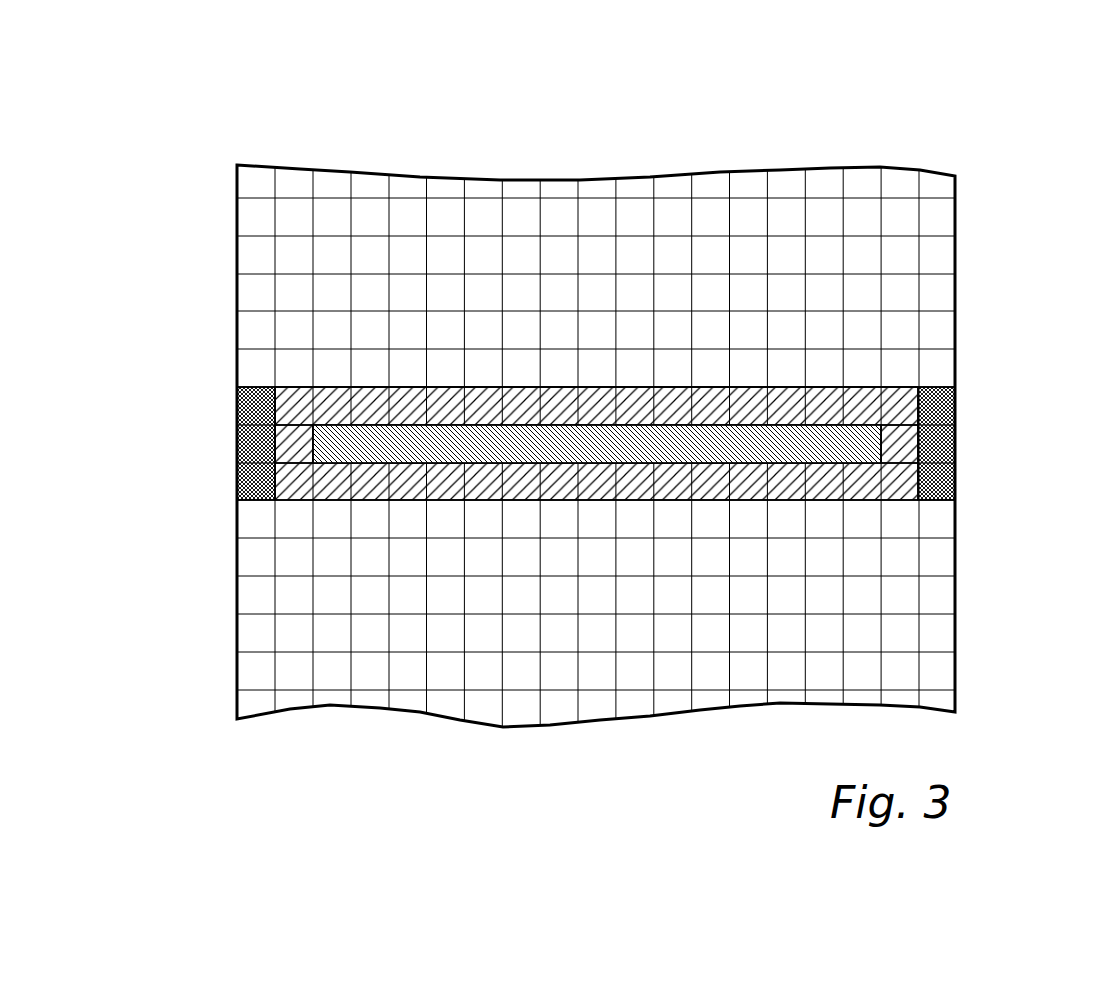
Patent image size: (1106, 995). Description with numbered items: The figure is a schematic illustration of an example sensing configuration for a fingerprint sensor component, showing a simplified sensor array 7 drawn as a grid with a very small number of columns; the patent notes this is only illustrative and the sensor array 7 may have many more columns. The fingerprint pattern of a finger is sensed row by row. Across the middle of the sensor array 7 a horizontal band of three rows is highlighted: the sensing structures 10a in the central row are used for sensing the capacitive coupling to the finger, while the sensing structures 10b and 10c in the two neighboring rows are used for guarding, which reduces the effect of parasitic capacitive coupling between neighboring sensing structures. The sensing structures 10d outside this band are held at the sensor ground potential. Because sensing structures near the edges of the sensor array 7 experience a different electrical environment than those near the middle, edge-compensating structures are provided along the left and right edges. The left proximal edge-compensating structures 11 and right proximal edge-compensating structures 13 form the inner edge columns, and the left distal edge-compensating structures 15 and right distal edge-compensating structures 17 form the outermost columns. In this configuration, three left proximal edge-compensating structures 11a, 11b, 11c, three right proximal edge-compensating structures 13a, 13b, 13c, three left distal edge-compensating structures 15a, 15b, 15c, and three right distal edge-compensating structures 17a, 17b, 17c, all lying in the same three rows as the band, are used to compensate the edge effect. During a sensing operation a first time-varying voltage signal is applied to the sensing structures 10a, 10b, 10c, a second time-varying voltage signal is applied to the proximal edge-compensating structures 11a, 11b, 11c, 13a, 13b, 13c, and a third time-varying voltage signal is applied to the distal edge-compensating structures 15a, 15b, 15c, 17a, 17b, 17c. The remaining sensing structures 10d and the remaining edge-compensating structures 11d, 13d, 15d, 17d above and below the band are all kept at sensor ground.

The sensor array 7 is at (1048, 276).
The sensing structures used for sensing 10a is at (560, 437).
The sensing structures used for guarding 10b is at (563, 485).
The sensing structures used for guarding 10c is at (557, 403).
The sensing structures outside the band 10d is at (562, 372).
The left proximal edge-compensating structures 11 is at (296, 138).
The left proximal edge-compensating structure 11a is at (293, 445).
The left proximal edge-compensating structure 11b is at (298, 493).
The left proximal edge-compensating structure 11c is at (293, 407).
The left proximal edge-compensating structure 11d is at (293, 373).
The right proximal edge-compensating structures 13 is at (902, 145).
The right proximal edge-compensating structure 13a is at (898, 447).
The right proximal edge-compensating structure 13b is at (892, 487).
The right proximal edge-compensating structure 13c is at (940, 410).
The right proximal edge-compensating structure 13d is at (903, 370).
The left distal edge-compensating structures 15 is at (254, 145).
The left distal edge-compensating structure 15a is at (250, 443).
The left distal edge-compensating structure 15b is at (245, 478).
The left distal edge-compensating structure 15c is at (237, 413).
The left distal edge-compensating structure 15d is at (247, 365).
The right distal edge-compensating structures 17 is at (948, 137).
The right distal edge-compensating structure 17a is at (942, 443).
The right distal edge-compensating structure 17b is at (957, 483).
The right distal edge-compensating structure 17c is at (907, 410).
The right distal edge-compensating structure 17d is at (943, 372).